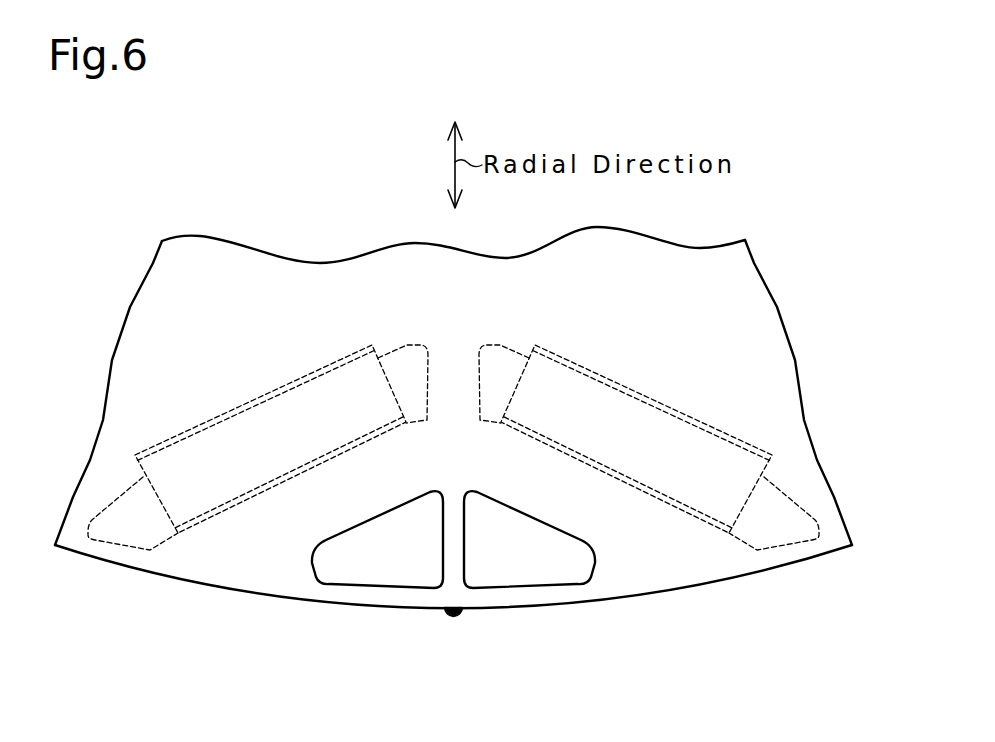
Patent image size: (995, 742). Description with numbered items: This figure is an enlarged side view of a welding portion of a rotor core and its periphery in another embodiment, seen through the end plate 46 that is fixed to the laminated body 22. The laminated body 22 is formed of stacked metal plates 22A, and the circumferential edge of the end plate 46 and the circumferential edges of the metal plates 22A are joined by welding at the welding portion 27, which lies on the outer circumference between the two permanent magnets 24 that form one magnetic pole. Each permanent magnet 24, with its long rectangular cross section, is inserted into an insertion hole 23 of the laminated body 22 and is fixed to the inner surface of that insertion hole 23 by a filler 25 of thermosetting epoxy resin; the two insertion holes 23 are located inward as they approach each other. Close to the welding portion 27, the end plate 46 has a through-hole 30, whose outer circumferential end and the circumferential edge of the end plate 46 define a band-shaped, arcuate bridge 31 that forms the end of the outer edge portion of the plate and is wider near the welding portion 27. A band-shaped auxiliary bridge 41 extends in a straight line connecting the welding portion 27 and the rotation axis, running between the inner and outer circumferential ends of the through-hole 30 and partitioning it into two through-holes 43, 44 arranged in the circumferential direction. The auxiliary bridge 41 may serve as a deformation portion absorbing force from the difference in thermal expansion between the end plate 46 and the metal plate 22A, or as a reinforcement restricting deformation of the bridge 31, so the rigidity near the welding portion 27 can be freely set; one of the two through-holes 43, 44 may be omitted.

The laminated body 22 is at (453, 462).
The metal plate 22A is at (333, 568).
The insertion hole 23 is at (209, 423).
The permanent magnet 24 is at (263, 396).
The filler 25 is at (397, 362).
The welding portion 27 is at (455, 618).
The through-hole 30 is at (451, 537).
The bridge 31 is at (402, 581).
The auxiliary bridge 41 is at (467, 553).
The through-hole 43 is at (401, 507).
The through-hole 44 is at (506, 507).
The end plate 46 is at (710, 580).